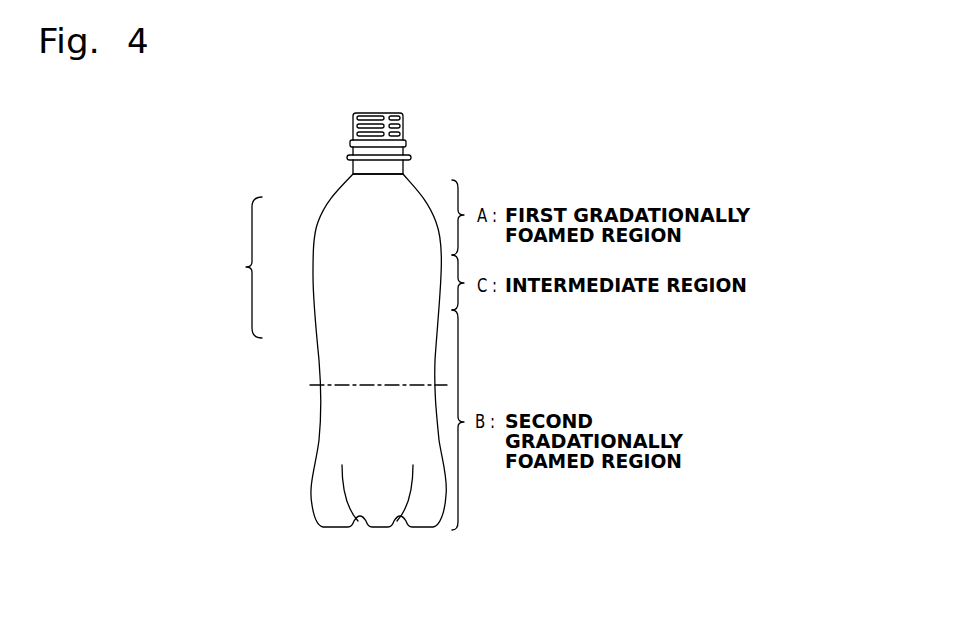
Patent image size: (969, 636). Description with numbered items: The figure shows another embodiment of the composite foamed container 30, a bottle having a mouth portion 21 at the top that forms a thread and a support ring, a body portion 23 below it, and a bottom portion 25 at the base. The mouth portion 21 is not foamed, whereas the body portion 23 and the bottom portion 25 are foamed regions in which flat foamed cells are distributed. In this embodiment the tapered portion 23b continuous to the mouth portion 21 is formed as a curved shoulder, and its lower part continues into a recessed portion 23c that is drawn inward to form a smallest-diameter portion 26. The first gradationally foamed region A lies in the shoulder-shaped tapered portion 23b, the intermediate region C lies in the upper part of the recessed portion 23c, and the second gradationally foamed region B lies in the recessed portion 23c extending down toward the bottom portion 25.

The mouth portion 21 is at (409, 127).
The body portion 23 is at (267, 267).
The tapered portion 23b is at (327, 210).
The recessed portion 23c is at (318, 337).
The bottom portion 25 is at (330, 527).
The smallest-diameter portion 26 is at (320, 387).
The composite foamed container 30 is at (302, 173).